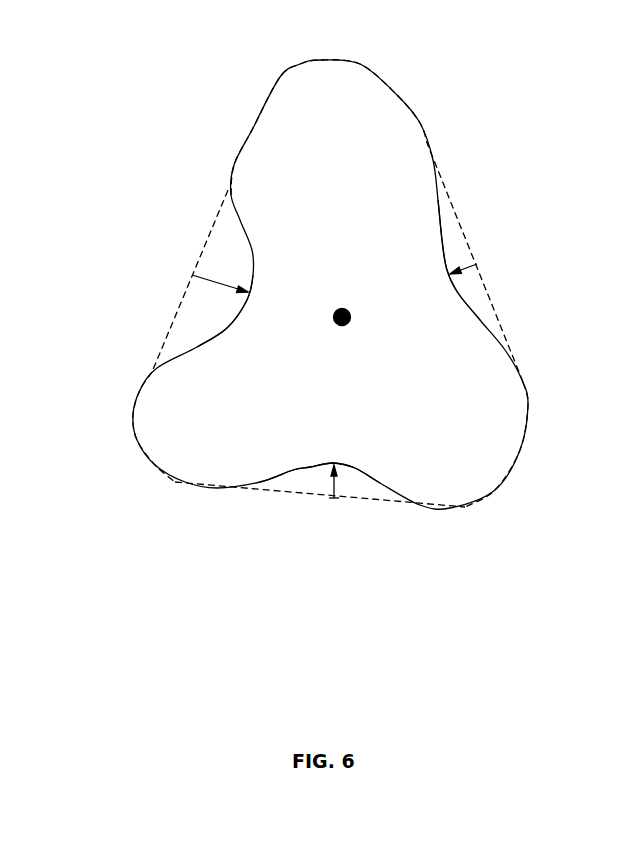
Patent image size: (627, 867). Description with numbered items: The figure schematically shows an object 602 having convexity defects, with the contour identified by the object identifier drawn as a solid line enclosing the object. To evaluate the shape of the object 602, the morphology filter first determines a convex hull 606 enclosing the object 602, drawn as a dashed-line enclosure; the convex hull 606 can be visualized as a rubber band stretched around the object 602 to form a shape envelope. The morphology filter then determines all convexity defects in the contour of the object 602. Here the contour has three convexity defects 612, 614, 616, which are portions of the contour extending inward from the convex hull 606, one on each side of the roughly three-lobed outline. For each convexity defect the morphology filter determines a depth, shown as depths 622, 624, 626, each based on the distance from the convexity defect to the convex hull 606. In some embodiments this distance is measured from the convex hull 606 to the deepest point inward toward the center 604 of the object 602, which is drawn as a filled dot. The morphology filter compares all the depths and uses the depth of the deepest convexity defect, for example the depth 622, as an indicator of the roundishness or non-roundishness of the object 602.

The object 602 is at (367, 93).
The center 604 is at (355, 310).
The convex hull 606 is at (215, 220).
The convexity defect 612 is at (225, 328).
The convexity defect 614 is at (295, 468).
The convexity defect 616 is at (458, 293).
The depth 622 is at (192, 275).
The depth 624 is at (335, 488).
The depth 626 is at (477, 264).